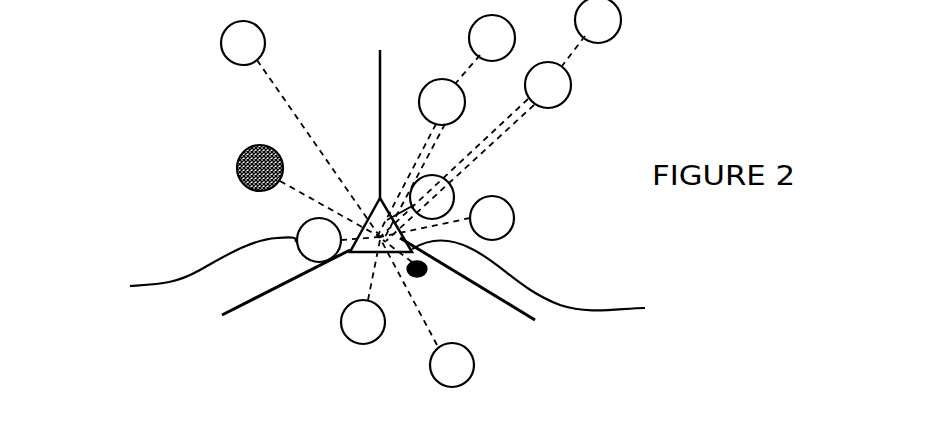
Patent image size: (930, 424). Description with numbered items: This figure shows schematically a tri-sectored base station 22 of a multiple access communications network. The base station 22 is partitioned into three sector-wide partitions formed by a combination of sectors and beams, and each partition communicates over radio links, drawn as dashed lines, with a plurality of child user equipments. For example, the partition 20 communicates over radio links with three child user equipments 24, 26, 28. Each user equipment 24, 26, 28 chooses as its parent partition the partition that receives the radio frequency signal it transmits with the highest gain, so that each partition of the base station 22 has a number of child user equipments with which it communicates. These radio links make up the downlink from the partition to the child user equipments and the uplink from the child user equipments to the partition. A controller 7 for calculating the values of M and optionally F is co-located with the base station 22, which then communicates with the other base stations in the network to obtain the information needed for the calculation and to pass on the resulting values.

The partition 20 is at (232, 124).
The child user equipment 28 is at (222, 42).
The child user equipment 26 is at (237, 167).
The child user equipment 24 is at (231, 260).
The tri-sectored base station 22 is at (544, 283).
The controller 7 is at (420, 278).